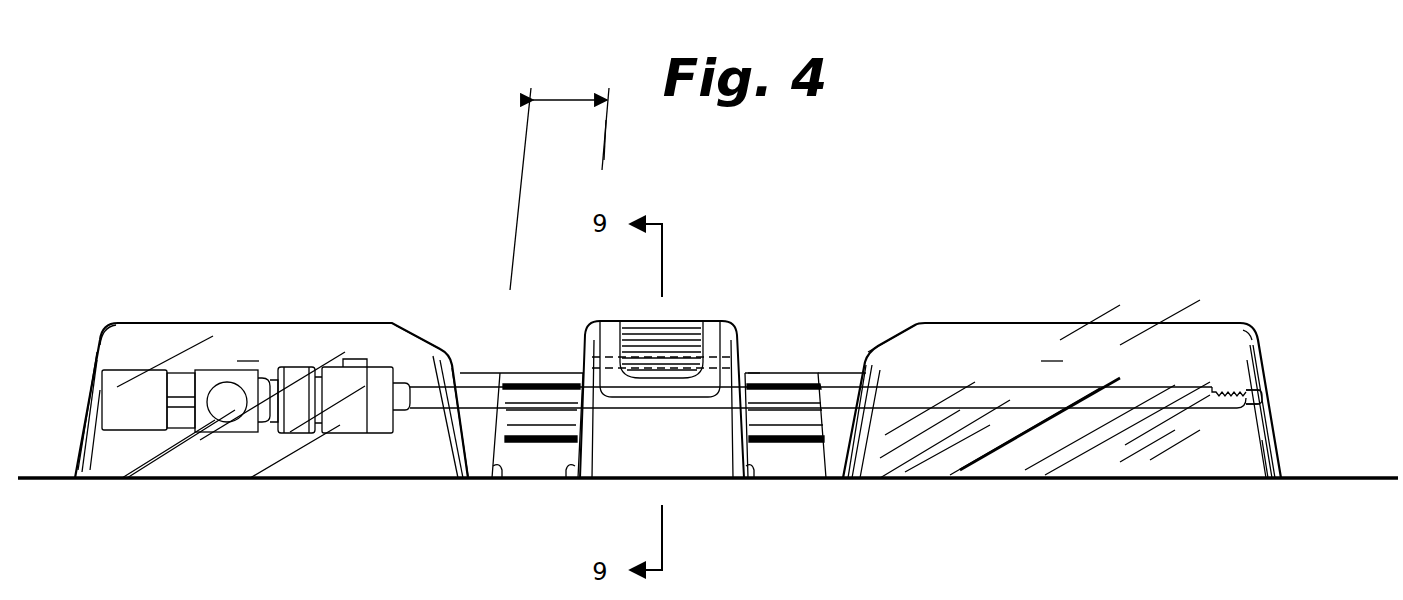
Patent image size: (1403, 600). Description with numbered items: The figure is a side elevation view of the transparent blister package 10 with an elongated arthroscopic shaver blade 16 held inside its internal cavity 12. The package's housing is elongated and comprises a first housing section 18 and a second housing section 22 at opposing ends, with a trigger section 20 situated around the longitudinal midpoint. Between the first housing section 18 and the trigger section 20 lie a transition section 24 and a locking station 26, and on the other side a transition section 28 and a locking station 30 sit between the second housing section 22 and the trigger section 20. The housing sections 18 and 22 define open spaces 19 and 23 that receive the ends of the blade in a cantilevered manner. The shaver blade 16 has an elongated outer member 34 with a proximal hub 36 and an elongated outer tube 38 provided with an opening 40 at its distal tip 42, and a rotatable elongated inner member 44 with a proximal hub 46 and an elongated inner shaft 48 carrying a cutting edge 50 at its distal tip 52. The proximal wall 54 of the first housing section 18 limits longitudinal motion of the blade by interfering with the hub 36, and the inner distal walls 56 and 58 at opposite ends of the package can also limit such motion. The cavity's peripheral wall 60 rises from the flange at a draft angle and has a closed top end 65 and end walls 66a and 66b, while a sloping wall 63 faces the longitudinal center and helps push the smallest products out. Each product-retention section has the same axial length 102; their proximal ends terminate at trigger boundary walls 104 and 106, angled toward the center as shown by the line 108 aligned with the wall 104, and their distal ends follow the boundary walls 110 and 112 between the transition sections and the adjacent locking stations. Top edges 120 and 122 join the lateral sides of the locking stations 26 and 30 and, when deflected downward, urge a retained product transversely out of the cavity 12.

The transparent blister package 10 is at (798, 292).
The internal cavity 12 is at (248, 483).
The arthroscopic shaver blade 16 is at (381, 360).
The first housing section 18 is at (250, 323).
The open space 19 is at (247, 350).
The trigger section 20 is at (738, 322).
The second housing section 22 is at (1000, 322).
The open space 23 is at (1051, 350).
The transition section 24 is at (471, 373).
The locking station 26 is at (547, 385).
The transition section 28 is at (869, 352).
The locking station 30 is at (760, 368).
The elongated outer member 34 is at (435, 402).
The proximal hub 36 is at (297, 425).
The elongated outer tube 38 is at (990, 408).
The opening 40 is at (1262, 388).
The distal tip 42 is at (1255, 402).
The rotatable elongated inner member 44 is at (160, 436).
The proximal hub 46 is at (132, 432).
The elongated inner shaft 48 is at (1072, 392).
The cutting edge 50 is at (1222, 390).
The distal tip 52 is at (1248, 392).
The proximal wall 54 is at (455, 372).
The inner distal wall 56 is at (108, 340).
The inner distal wall 58 is at (1268, 450).
The peripheral wall 60 is at (885, 450).
The sloping wall 63 is at (413, 330).
The closed top end 65 is at (192, 323).
The end wall 66a is at (95, 375).
The end wall 66b is at (1275, 445).
The axial length 102 is at (567, 97).
The trigger boundary wall 104 is at (568, 478).
The trigger boundary wall 106 is at (752, 456).
The line 108 is at (612, 148).
The boundary wall 110 is at (500, 478).
The boundary wall 112 is at (812, 372).
The top edge 120 is at (497, 373).
The top edge 122 is at (826, 370).